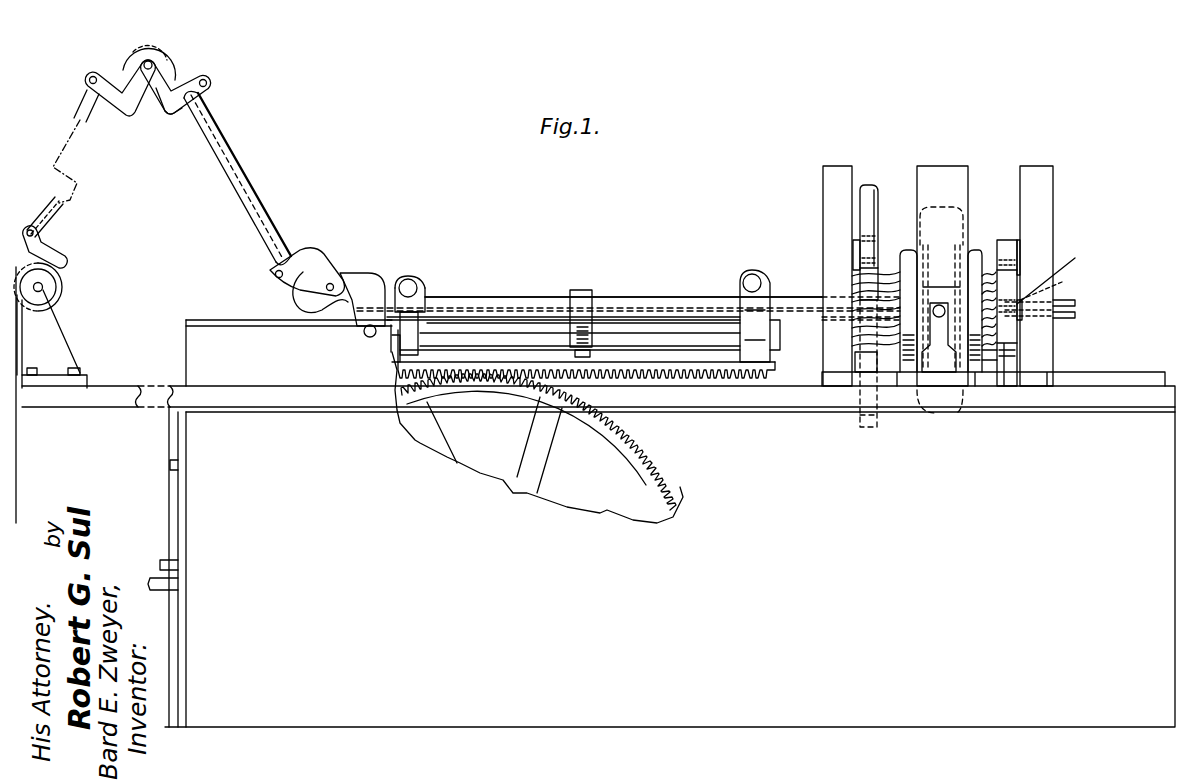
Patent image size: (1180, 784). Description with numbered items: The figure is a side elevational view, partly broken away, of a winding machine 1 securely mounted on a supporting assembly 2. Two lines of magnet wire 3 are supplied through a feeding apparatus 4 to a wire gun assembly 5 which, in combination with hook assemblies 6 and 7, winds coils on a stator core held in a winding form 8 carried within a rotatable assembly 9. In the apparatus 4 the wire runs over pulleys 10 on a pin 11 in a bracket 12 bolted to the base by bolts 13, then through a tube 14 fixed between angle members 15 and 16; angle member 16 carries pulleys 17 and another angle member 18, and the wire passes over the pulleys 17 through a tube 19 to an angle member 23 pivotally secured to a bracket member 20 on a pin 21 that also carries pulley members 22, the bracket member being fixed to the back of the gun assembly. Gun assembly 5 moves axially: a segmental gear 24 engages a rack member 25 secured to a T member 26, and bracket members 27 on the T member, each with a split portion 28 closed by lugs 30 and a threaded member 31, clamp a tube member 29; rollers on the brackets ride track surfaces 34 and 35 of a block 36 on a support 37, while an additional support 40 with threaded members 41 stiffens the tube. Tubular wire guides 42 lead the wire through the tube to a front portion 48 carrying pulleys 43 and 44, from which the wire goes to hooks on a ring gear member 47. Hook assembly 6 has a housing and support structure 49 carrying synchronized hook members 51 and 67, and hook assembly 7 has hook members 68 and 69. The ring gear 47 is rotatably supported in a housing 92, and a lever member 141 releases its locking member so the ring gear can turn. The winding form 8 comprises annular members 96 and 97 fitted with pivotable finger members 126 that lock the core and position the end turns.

The winding machine 1 is at (540, 216).
The supporting assembly 2 is at (196, 494).
The magnet wire 3 is at (16, 465).
The apparatus 4 is at (885, 440).
The wire gun assembly 5 is at (706, 296).
The hook assembly 6 is at (834, 166).
The hook assembly 7 is at (1036, 166).
The winding form 8 is at (996, 229).
The rotatable assembly 9 is at (992, 186).
The pulleys 10 is at (62, 284).
The pin 11 is at (41, 293).
The bracket 12 is at (72, 334).
The bolts 13 is at (70, 368).
The tube 14 is at (85, 122).
The angle member 15 is at (55, 250).
The angle member 16 is at (112, 80).
The pulleys 17 is at (151, 40).
The angle member 18 is at (170, 104).
The tube 19 is at (255, 192).
The bracket member 20 is at (372, 272).
The pin 21 is at (332, 283).
The pulley members 22 is at (315, 295).
The angle member 23 is at (316, 250).
The segmental gear 24 is at (650, 487).
The rack member 25 is at (768, 367).
The T member 26 is at (392, 362).
The bracket members 27 is at (424, 288).
The split portion 28 is at (418, 298).
The tube member 29 is at (636, 297).
The lugs 30 is at (418, 276).
The threaded member 31 is at (407, 278).
The surface 34 is at (518, 326).
The surface 35 is at (392, 345).
The block 36 is at (203, 319).
The support 37 is at (192, 352).
The additional support 40 is at (588, 292).
The threaded members 41 is at (592, 353).
The tubular wire guides 42 is at (672, 304).
The pulleys 43 is at (1046, 295).
The pulleys 44 is at (1070, 310).
The ring gear member 47 is at (955, 412).
The front portion 48 is at (1053, 277).
The housing and support structure 49 is at (823, 206).
The hook member 51 is at (860, 430).
The hook member 67 is at (873, 193).
The hook member 68 is at (1005, 364).
The hook member 69 is at (1006, 240).
The housing 92 is at (948, 166).
The annular member 96 is at (906, 250).
The annular member 97 is at (976, 250).
The finger member 126 is at (858, 286).
The lever member 141 is at (942, 378).